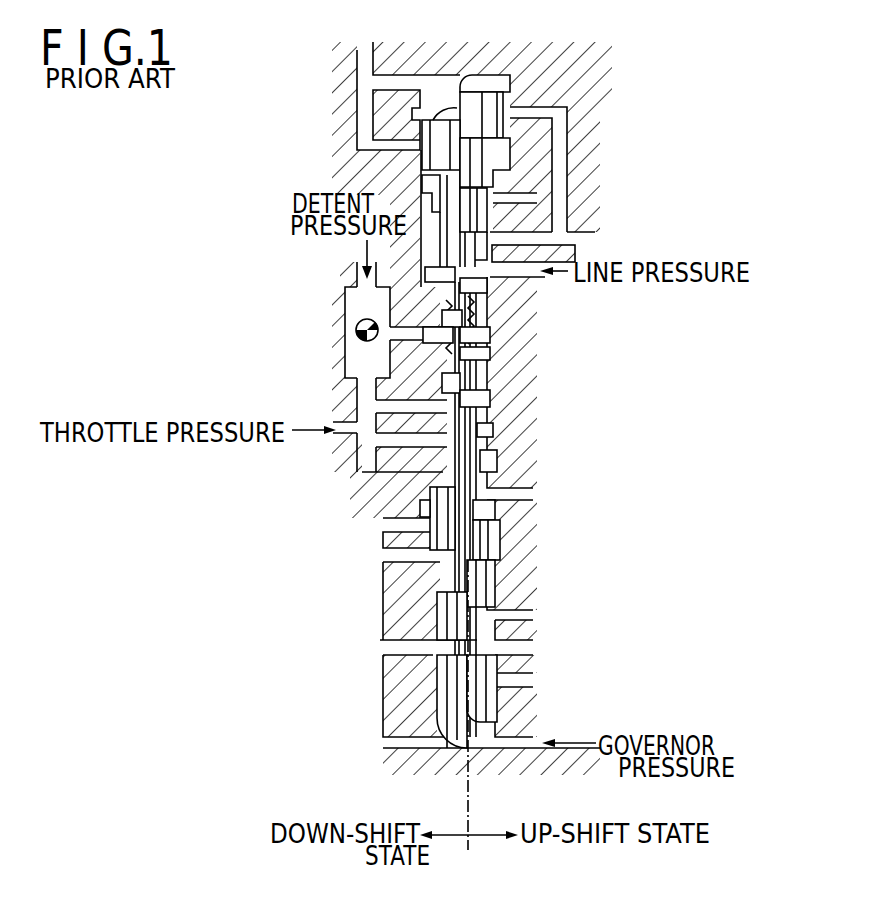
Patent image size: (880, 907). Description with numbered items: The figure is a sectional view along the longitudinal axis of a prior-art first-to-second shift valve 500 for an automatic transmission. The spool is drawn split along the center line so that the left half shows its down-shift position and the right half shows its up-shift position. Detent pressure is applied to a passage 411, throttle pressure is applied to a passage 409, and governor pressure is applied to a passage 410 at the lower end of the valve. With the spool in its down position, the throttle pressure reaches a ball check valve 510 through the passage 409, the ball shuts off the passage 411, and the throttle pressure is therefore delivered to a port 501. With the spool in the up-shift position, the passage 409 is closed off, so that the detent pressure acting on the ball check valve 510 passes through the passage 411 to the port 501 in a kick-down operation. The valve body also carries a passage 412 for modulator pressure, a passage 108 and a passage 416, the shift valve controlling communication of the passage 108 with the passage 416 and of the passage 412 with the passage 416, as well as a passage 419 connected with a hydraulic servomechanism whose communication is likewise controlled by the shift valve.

The passage 412 is at (356, 57).
The passage 416 is at (583, 232).
The passage 411 is at (352, 284).
The ball check valve 510 is at (340, 328).
The port 501 is at (438, 336).
The passage 108 is at (522, 272).
The passage 409 is at (350, 428).
The passage 419 is at (400, 523).
The passage 410 is at (527, 735).
The 1-2 shift valve 500 is at (487, 760).